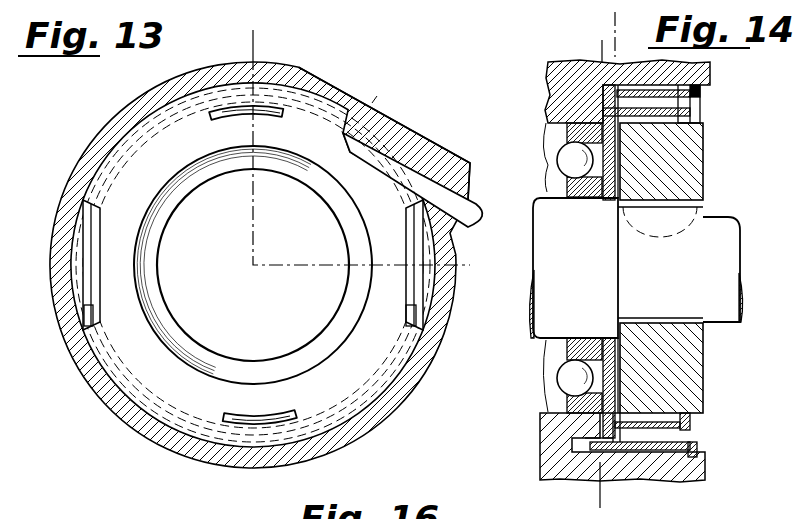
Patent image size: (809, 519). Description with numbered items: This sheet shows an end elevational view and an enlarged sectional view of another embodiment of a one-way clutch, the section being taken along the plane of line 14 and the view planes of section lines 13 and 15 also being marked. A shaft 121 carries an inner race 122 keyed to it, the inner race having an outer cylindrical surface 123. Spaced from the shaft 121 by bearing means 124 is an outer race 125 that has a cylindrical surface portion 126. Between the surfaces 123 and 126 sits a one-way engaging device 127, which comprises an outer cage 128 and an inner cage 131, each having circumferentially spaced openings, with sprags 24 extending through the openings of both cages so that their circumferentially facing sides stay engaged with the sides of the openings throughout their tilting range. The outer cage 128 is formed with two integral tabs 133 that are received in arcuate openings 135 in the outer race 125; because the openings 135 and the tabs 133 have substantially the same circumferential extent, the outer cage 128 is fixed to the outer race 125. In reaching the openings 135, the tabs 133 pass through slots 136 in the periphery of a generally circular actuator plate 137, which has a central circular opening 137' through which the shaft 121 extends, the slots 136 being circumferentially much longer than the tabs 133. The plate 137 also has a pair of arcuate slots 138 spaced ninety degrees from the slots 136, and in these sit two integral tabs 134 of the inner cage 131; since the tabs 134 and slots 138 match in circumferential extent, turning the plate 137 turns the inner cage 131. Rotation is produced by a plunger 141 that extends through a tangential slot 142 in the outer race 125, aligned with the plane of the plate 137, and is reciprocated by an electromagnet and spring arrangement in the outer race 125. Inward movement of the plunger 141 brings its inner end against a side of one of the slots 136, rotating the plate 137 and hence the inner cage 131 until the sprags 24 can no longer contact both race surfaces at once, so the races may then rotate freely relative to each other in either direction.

In FIG. 14, the section line 13- 13 is at (597, 45).
In FIG. 13, the section line 14- 14 is at (232, 42).
In FIG. 14, the section line 15- 15 is at (630, 25).
In FIG. 14, the sprags 24 is at (665, 440).
In FIG. 14, the shaft 121 is at (722, 226).
In FIG. 14, the inner race 122 is at (703, 353).
In FIG. 14, the outer cylindrical surface 123 is at (692, 415).
In FIG. 14, the bearing means 124 is at (557, 378).
In FIG. 13, the outer race 125 is at (96, 143).
In FIG. 14, the outer race 125 is at (556, 74).
In FIG. 14, the cylindrical surface portion 126 is at (706, 88).
In FIG. 14, the one-way engaging device 127 is at (706, 108).
In FIG. 13, the outer cage 128 is at (113, 400).
In FIG. 14, the outer cage 128 is at (652, 448).
In FIG. 13, the inner cage 131 is at (155, 148).
In FIG. 14, the inner cage 131 is at (690, 432).
In FIG. 13, the tabs 133 is at (82, 237).
In FIG. 14, the tabs 133 is at (600, 437).
In FIG. 13, the tabs 134 is at (231, 118).
In FIG. 14, the tabs 134 is at (603, 112).
In FIG. 13, the arcuate openings 135 is at (78, 250).
In FIG. 14, the arcuate openings 135 is at (594, 448).
In FIG. 13, the slots 136 is at (83, 320).
In FIG. 14, the slots 136 is at (618, 402).
In FIG. 13, the actuator plate 137 is at (253, 265).
In FIG. 13, the circular opening 137' is at (253, 265).
In FIG. 14, the circular opening 137' is at (644, 321).
In FIG. 13, the arcuate slots 138 is at (274, 116).
In FIG. 14, the arcuate slots 138 is at (567, 133).
In FIG. 13, the plunger 141 is at (468, 207).
In FIG. 13, the tangential slot 142 is at (421, 163).